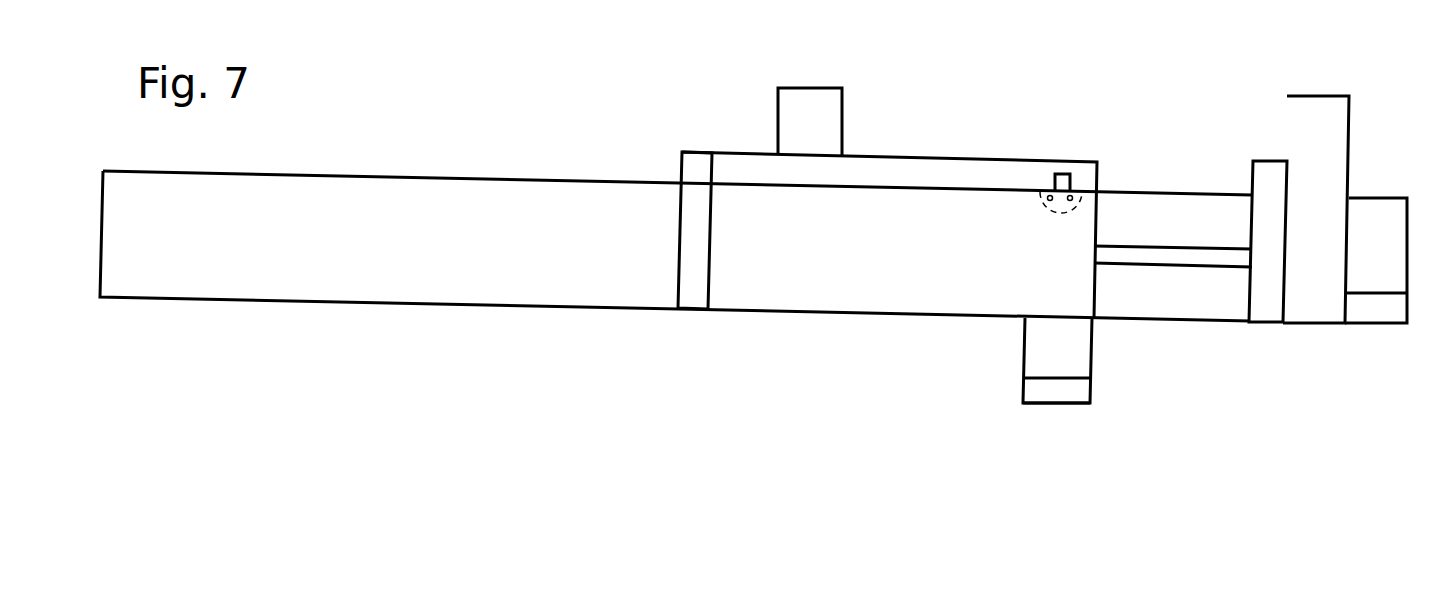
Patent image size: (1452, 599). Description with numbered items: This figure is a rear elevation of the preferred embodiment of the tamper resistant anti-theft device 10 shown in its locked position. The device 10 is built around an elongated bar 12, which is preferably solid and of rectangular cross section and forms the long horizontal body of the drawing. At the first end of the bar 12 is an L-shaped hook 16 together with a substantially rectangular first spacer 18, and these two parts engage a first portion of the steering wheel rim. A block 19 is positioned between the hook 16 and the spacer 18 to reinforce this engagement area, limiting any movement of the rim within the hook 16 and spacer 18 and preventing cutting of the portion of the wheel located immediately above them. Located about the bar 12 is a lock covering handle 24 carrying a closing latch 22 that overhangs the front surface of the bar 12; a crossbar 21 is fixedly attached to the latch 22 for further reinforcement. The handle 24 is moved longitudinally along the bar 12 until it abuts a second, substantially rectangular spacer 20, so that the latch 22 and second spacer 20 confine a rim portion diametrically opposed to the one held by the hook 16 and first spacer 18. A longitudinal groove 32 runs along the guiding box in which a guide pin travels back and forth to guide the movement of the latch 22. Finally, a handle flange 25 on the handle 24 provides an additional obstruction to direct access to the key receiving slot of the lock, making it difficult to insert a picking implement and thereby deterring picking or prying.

The anti-theft device 10 is at (771, 322).
The elongated bar 12 is at (425, 172).
The L-shaped hook 16 is at (1409, 201).
The first spacer 18 is at (1267, 307).
The block 19 is at (1349, 125).
The second spacer 20 is at (700, 151).
The crossbar 21 is at (843, 121).
The closing latch 22 is at (943, 158).
The lock covering handle 24 is at (1093, 365).
The handle flange 25 is at (1022, 405).
The longitudinal groove 32 is at (1162, 249).